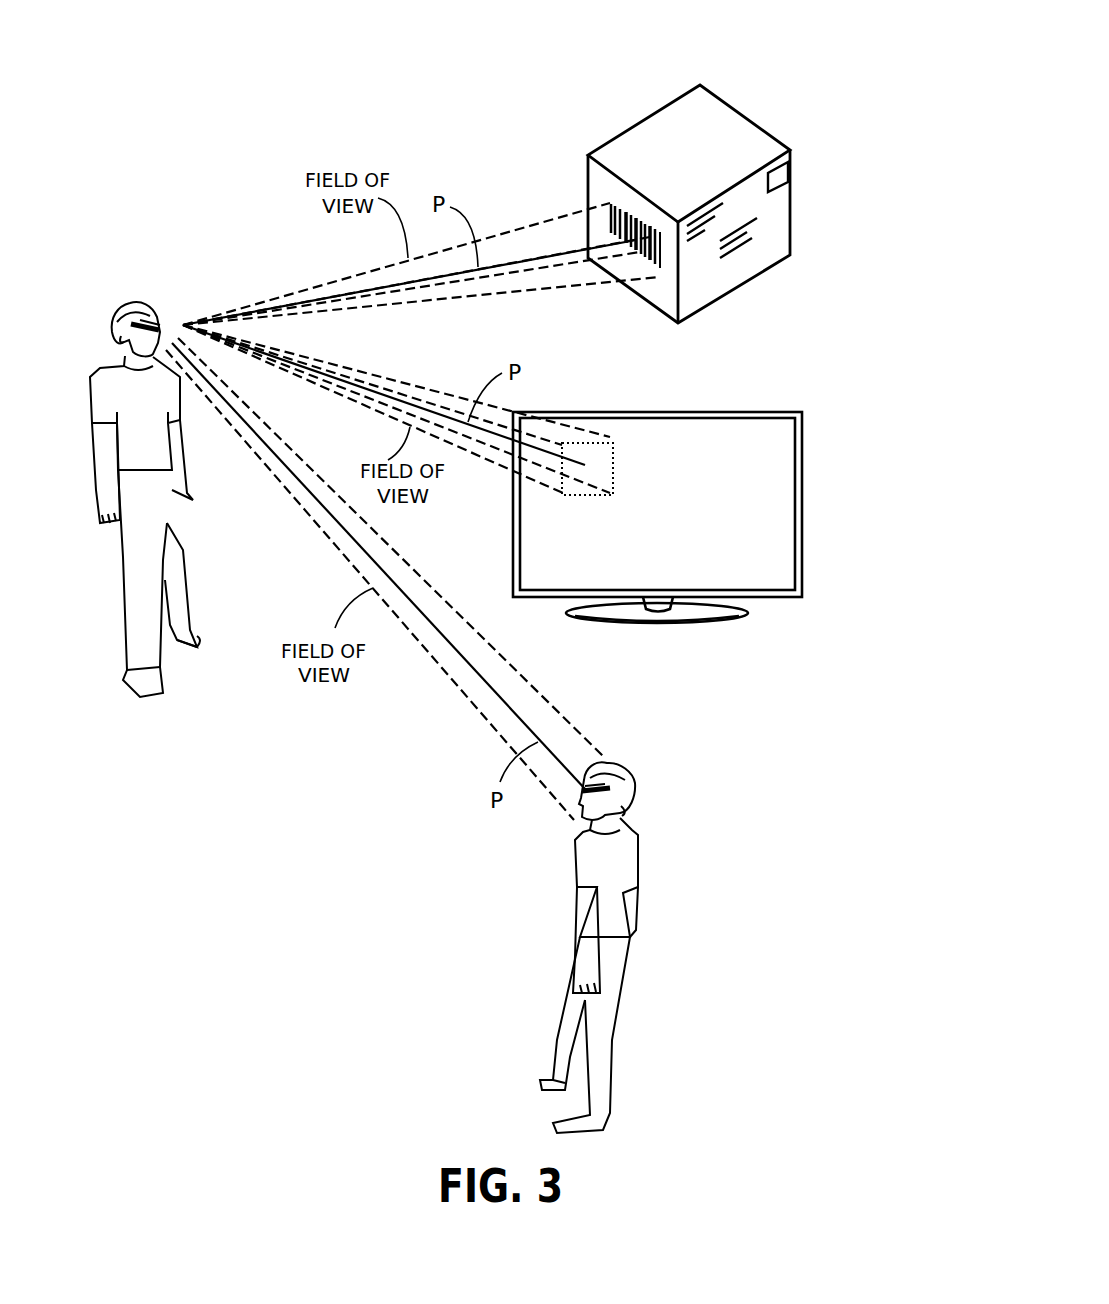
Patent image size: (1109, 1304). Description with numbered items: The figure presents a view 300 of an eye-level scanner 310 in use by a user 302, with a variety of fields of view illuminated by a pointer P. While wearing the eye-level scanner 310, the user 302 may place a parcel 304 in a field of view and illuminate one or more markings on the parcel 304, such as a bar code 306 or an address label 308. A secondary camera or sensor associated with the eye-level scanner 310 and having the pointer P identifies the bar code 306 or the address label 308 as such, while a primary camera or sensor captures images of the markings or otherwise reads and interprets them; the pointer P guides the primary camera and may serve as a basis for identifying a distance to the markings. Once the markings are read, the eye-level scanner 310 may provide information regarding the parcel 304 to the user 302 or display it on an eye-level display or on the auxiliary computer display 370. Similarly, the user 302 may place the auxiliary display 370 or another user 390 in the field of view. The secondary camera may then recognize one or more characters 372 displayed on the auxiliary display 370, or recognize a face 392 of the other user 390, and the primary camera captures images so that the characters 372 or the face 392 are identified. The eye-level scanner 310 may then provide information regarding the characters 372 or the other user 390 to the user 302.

The view 300 is at (300, 108).
The user 302 is at (138, 256).
The parcel 304 is at (742, 55).
The bar code 306 is at (620, 205).
The address label 308 is at (763, 253).
The eye-level scanner 310 is at (153, 288).
The auxiliary computer display 370 is at (810, 375).
The characters 372 is at (647, 460).
The other user 390 is at (715, 760).
The face 392 is at (608, 758).